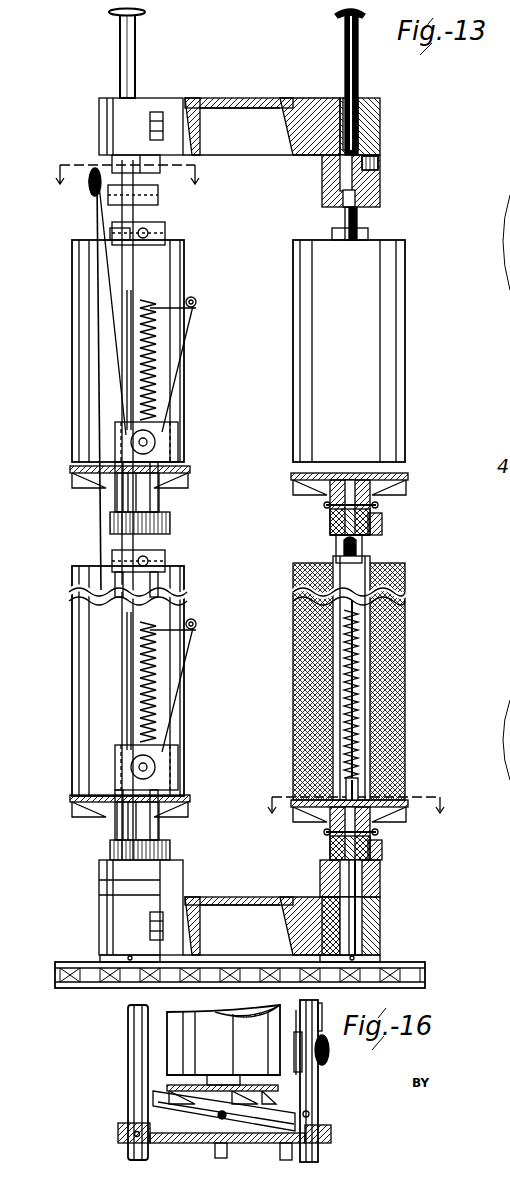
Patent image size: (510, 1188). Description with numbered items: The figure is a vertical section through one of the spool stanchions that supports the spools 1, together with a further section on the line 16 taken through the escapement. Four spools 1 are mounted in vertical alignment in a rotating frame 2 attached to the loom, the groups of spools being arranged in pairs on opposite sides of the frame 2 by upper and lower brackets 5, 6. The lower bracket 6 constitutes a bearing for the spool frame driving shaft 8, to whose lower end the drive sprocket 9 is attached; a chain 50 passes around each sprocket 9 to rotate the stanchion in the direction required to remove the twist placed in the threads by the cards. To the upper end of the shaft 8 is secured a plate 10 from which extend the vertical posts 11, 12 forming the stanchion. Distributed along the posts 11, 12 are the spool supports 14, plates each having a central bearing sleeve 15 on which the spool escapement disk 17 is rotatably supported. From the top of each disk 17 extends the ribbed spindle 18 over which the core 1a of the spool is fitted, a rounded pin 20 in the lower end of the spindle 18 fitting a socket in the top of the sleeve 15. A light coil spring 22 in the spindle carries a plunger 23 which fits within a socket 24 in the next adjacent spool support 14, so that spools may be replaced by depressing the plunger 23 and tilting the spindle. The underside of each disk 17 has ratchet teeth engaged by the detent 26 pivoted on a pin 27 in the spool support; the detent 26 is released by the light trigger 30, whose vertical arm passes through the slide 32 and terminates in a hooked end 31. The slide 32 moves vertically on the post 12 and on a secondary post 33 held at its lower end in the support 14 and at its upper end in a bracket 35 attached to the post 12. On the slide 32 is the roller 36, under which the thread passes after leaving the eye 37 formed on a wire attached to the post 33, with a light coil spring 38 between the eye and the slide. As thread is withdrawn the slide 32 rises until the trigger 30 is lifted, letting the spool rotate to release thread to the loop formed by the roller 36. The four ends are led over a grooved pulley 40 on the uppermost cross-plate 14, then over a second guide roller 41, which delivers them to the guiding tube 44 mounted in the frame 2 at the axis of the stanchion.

In FIG. 13, the spool 1 is at (388, 356).
In FIG. 16, the spool 1 is at (176, 1036).
In FIG. 13, the core 1a is at (334, 236).
In FIG. 13, the rotating frame 2 is at (254, 99).
In FIG. 13, the upper bracket 5 is at (138, 108).
In FIG. 13, the lower bracket 6 is at (108, 924).
In FIG. 13, the spool frame driving shaft 8 is at (362, 922).
In FIG. 13, the drive sprocket 9 is at (422, 966).
In FIG. 13, the plate 10 is at (380, 872).
In FIG. 13, the vertical post 11 is at (358, 230).
In FIG. 16, the vertical post 11 is at (130, 1060).
In FIG. 13, the vertical post 12 is at (356, 218).
In FIG. 16, the vertical post 12 is at (320, 1158).
In FIG. 13, the spool support 14 is at (382, 852).
In FIG. 16, the spool support 14 is at (326, 1130).
In FIG. 13, the bearing sleeve 15 is at (116, 492).
In FIG. 13, the cable 16 is at (114, 397).
In FIG. 13, the spool escapement disk 17 is at (178, 484).
In FIG. 16, the spool escapement disk 17 is at (278, 1092).
In FIG. 13, the ribbed spindle 18 is at (360, 698).
In FIG. 13, the rounded pin 20 is at (360, 784).
In FIG. 13, the light coil spring 22 is at (362, 730).
In FIG. 13, the plunger 23 is at (362, 548).
In FIG. 13, the socket 24 is at (340, 531).
In FIG. 13, the detent 26 is at (332, 513).
In FIG. 16, the detent 26 is at (158, 1098).
In FIG. 13, the pin 27 is at (372, 506).
In FIG. 16, the pin 27 is at (232, 1150).
In FIG. 13, the light trigger 30 is at (150, 496).
In FIG. 16, the light trigger 30 is at (310, 1112).
In FIG. 13, the hooked end 31 is at (134, 410).
In FIG. 16, the hooked end 31 is at (294, 1026).
In FIG. 13, the slide 32 is at (156, 456).
In FIG. 16, the slide 32 is at (330, 1062).
In FIG. 13, the secondary post 33 is at (152, 470).
In FIG. 16, the secondary post 33 is at (306, 1004).
In FIG. 13, the bracket 35 is at (162, 235).
In FIG. 13, the roller 36 is at (148, 442).
In FIG. 13, the eye 37 is at (197, 301).
In FIG. 13, the light coil spring 38 is at (155, 366).
In FIG. 13, the grooved pulley 40 is at (90, 198).
In FIG. 13, the guide roller 41 is at (112, 162).
In FIG. 13, the guiding tube 44 is at (137, 50).
In FIG. 13, the chain 50 is at (250, 988).